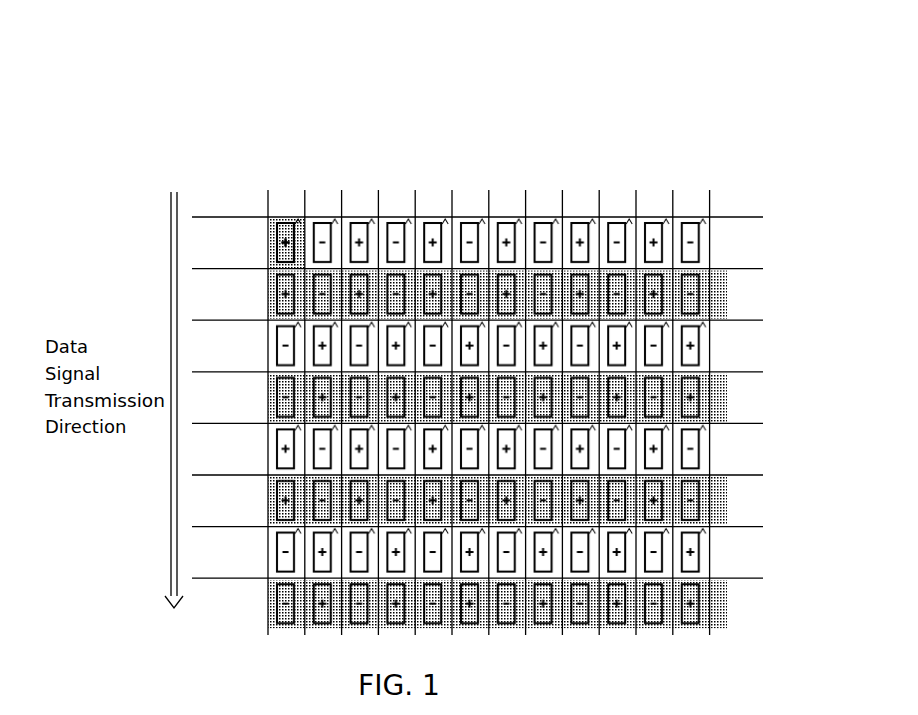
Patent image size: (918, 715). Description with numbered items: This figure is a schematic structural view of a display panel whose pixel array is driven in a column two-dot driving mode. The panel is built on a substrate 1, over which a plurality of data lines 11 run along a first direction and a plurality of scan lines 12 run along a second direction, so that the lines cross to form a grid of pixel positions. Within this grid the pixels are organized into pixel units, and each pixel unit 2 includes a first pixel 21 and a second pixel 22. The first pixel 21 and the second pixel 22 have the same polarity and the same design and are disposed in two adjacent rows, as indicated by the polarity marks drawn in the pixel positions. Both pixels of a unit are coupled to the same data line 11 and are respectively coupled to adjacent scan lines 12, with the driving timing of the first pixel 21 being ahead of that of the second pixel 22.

The substrate 1 is at (210, 235).
The pixel unit 2 is at (317, 162).
The first pixel 21 is at (284, 258).
The second pixel 22 is at (292, 275).
The data line 11 is at (378, 217).
The scan line 12 is at (467, 218).